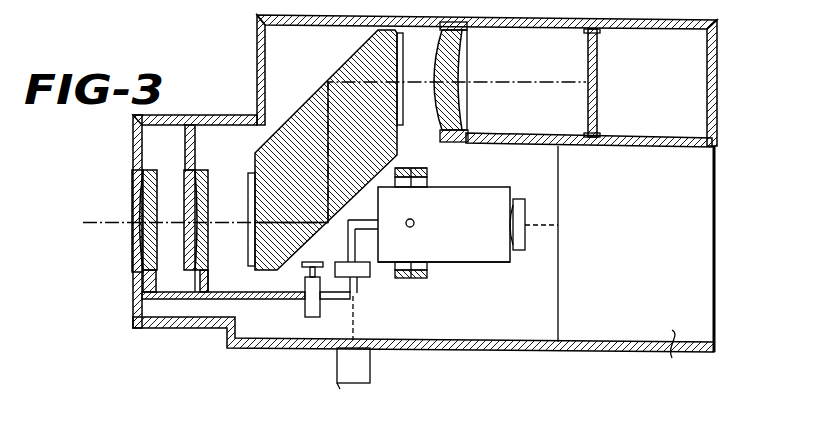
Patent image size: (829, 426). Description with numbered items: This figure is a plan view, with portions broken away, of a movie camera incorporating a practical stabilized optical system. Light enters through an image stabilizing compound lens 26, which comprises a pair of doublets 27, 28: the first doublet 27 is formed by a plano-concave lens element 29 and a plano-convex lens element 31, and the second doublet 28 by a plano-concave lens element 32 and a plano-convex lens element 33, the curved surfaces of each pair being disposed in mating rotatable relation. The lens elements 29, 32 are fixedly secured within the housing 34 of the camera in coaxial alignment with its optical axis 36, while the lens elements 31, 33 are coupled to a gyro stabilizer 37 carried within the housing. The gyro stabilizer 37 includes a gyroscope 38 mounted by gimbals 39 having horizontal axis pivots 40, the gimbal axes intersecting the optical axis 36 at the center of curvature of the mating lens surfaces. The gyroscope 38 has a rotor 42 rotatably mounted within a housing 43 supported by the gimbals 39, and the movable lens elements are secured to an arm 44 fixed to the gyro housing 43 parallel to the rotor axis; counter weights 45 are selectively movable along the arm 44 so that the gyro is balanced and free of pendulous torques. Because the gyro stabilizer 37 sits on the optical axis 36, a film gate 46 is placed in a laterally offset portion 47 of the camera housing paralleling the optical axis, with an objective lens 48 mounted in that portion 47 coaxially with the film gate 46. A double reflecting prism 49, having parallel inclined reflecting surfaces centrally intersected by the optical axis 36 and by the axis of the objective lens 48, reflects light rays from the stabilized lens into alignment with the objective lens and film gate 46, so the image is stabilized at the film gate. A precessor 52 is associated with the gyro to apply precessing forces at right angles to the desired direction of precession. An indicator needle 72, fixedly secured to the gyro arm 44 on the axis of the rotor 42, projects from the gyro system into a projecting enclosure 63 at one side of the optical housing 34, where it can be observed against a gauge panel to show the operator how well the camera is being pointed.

The image stabilizing compound lens 26 is at (164, 160).
The doublet 27 is at (134, 279).
The doublet 28 is at (176, 278).
The plano-concave lens element 29 is at (133, 177).
The plano-convex lens element 31 is at (154, 207).
The plano-concave lens element 32 is at (199, 171).
The plano-convex lens element 33 is at (210, 260).
The housing 34 is at (690, 16).
The optical axis 36 is at (104, 222).
The gyro stabilizer 37 is at (452, 289).
The gyroscope 38 is at (478, 264).
The gimbals 39 is at (434, 172).
The horizontal axis pivots 40 is at (428, 156).
The rotor 42 is at (520, 203).
The housing 43 is at (458, 237).
The arm 44 is at (264, 299).
The counter weights 45 is at (316, 317).
The film gate 46 is at (601, 106).
The laterally offset portion 47 is at (665, 121).
The objective lens 48 is at (458, 69).
The double reflecting prism 49 is at (306, 166).
The precessor 52 is at (717, 222).
The projecting enclosure 63 is at (338, 391).
The indicator needle 72 is at (358, 326).